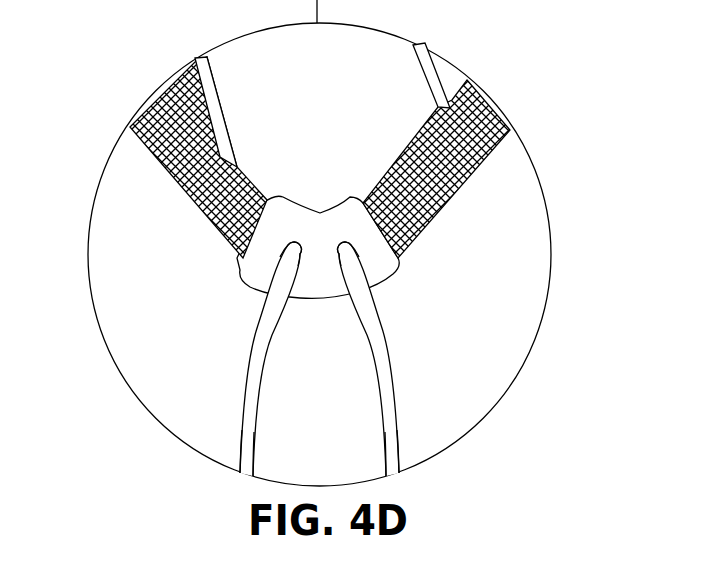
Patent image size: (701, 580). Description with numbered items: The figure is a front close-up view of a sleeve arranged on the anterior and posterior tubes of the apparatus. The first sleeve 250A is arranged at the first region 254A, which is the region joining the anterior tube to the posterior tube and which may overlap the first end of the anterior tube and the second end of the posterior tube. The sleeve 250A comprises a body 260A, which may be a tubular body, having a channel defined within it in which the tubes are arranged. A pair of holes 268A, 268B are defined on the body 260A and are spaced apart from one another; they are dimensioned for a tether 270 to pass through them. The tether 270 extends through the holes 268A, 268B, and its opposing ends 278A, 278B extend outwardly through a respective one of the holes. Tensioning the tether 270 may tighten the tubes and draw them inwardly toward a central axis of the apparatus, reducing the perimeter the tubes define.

The first sleeve 250A is at (243, 279).
The first region 254A is at (387, 254).
The body 260A is at (322, 243).
The hole 268A is at (288, 243).
The hole 268B is at (349, 247).
The tether 270 is at (243, 390).
The opposing end of the tether 278A is at (240, 472).
The opposing end of the tether 278B is at (399, 471).